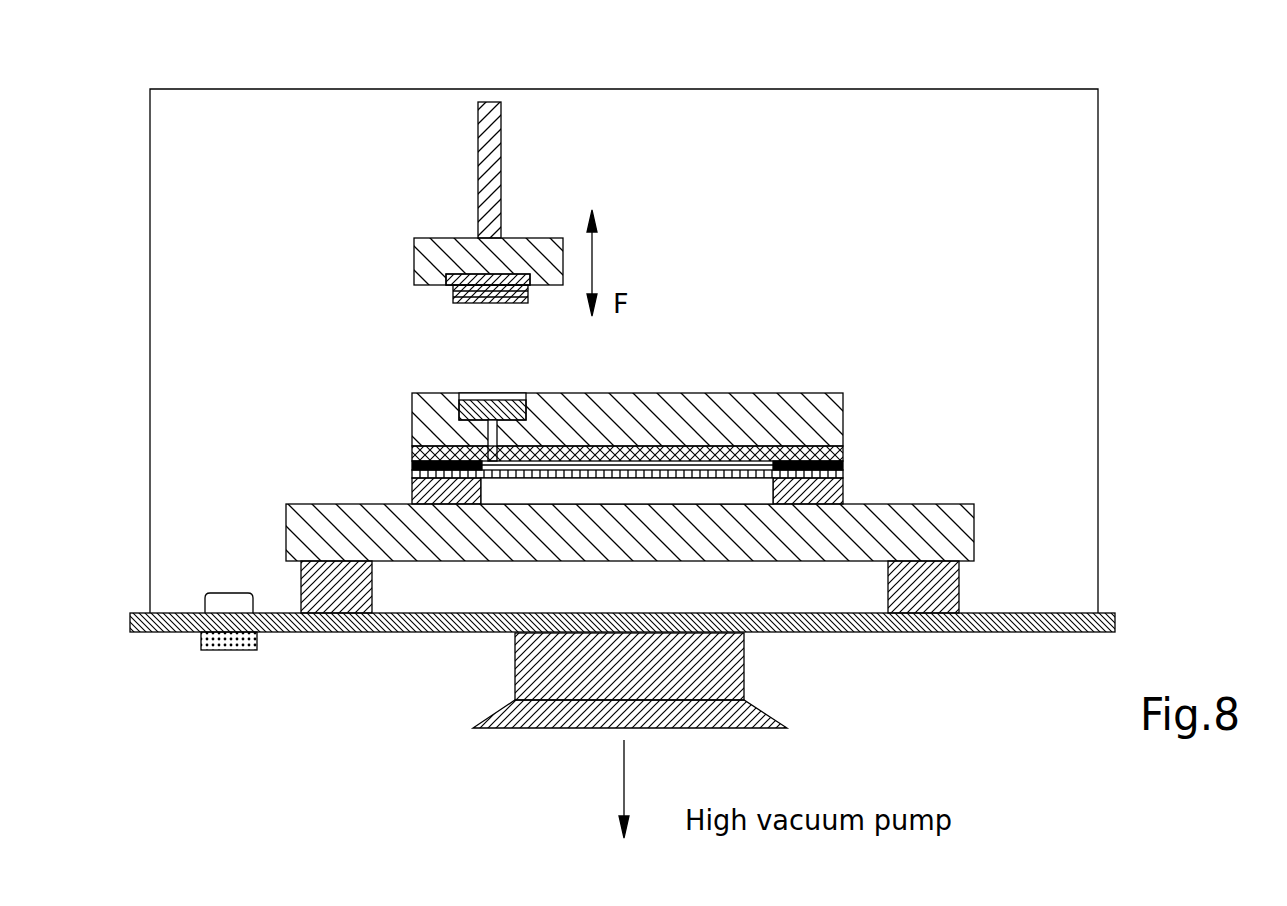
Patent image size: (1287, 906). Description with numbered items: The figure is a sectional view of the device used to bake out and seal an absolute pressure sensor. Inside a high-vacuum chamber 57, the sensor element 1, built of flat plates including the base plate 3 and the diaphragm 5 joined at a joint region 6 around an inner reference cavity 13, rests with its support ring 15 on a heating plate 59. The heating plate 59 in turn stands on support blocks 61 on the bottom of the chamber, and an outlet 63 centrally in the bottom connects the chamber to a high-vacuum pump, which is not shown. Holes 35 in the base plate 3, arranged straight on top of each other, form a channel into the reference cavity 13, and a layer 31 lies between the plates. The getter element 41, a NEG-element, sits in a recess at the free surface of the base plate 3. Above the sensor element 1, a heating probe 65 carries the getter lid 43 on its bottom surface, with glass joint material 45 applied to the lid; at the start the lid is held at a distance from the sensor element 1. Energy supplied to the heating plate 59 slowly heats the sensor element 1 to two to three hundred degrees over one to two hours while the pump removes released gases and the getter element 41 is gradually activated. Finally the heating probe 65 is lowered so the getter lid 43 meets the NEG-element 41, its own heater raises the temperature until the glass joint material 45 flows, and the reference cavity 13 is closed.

The sensor element 1 is at (628, 448).
The base plate 3 is at (820, 420).
The diaphragm 5 is at (412, 471).
The joint region 6 is at (843, 466).
The reference cavity 13 is at (537, 463).
The support ring 15 is at (828, 497).
The adhesive layer 31 is at (412, 455).
The holes 35 is at (497, 447).
The getter element 41 is at (505, 420).
The getter lid 43 is at (477, 273).
The glass joint material 45 is at (452, 295).
The high-vacuum chamber 57 is at (903, 118).
The heating plate 59 is at (952, 530).
The support blocks 61 is at (953, 577).
The outlet 63 is at (741, 652).
The heating probe 65 is at (490, 118).